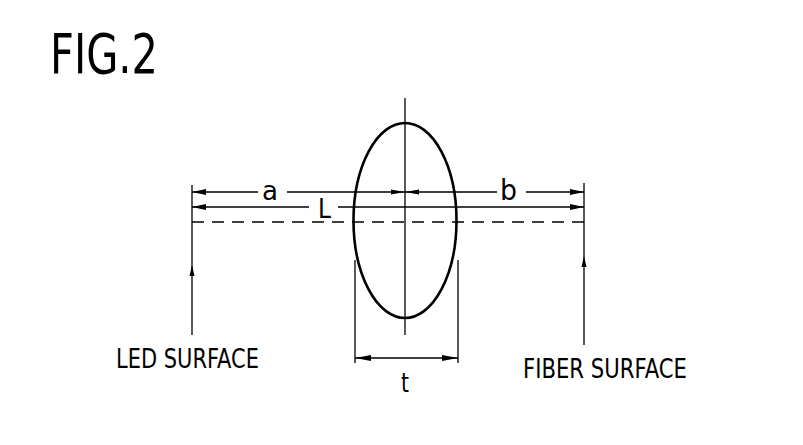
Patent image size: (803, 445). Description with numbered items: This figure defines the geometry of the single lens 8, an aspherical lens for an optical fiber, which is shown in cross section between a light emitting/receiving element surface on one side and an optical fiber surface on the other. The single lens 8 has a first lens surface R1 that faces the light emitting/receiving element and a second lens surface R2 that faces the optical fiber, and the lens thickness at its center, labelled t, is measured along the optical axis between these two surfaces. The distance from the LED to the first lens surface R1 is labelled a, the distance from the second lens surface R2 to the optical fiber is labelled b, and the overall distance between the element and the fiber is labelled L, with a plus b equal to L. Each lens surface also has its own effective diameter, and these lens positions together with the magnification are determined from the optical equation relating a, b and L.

The single lens 8 is at (428, 130).
The first lens surface R1 is at (352, 157).
The second lens surface R2 is at (460, 162).